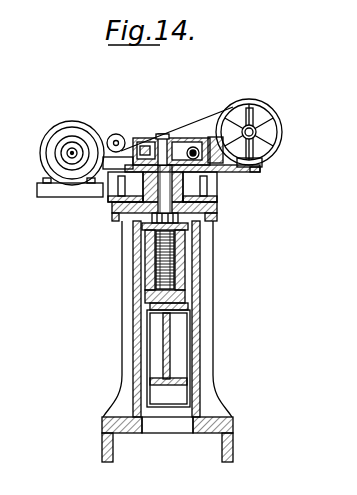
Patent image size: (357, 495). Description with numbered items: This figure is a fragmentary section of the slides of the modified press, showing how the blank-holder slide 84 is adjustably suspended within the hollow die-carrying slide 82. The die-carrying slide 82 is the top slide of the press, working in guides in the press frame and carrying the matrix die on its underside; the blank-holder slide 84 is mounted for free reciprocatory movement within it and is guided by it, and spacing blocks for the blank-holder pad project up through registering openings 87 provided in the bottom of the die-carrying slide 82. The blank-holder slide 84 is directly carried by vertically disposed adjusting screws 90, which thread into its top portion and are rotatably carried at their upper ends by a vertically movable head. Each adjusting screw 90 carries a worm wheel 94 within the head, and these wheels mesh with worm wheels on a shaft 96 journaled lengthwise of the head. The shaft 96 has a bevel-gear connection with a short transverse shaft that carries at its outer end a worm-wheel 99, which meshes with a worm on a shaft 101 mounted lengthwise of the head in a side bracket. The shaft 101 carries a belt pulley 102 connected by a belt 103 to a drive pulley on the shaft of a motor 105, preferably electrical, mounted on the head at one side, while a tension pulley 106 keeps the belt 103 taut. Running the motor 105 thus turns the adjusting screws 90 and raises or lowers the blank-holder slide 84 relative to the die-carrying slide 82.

The die-carrying slide 82 is at (135, 353).
The blank-holder slide 84 is at (168, 341).
The registering openings 87 is at (168, 423).
The adjusting screws 90 is at (180, 259).
The worm wheel 94 is at (153, 138).
The shaft 96 is at (213, 176).
The worm-wheel 99 is at (256, 170).
The shaft 101 is at (257, 132).
The belt pulley 102 is at (251, 103).
The belt 103 is at (190, 124).
The motor 105 is at (73, 130).
The tension pulley 106 is at (116, 141).